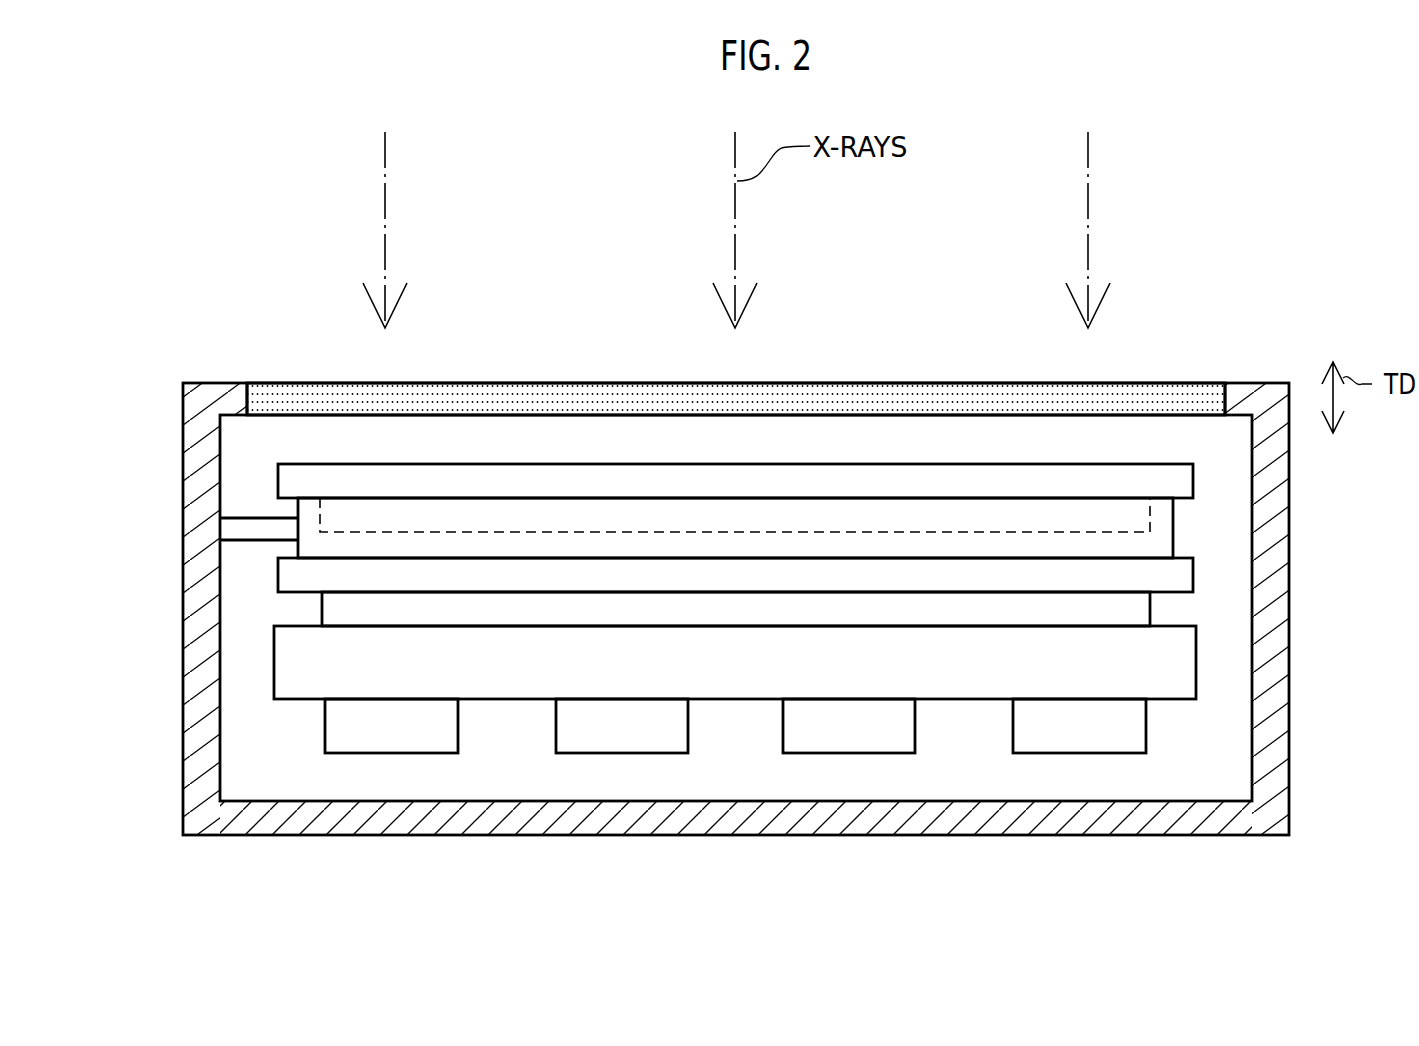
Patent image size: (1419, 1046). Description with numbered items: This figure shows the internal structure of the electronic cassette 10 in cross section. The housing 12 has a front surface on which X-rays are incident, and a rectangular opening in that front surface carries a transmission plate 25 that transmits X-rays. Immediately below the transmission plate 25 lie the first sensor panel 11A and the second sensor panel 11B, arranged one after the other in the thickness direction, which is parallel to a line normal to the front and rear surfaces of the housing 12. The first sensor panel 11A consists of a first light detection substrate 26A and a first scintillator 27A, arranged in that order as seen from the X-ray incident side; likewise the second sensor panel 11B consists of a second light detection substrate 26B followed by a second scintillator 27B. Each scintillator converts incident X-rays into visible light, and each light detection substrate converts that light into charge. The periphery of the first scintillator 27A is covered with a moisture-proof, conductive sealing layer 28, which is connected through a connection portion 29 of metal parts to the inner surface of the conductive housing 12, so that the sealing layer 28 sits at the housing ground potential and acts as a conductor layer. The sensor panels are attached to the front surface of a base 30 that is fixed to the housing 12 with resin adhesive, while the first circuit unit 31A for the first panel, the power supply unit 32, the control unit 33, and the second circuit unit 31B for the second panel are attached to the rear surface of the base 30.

The electronic cassette 10 is at (732, 552).
The housing 12 is at (222, 382).
The transmission plate 25 is at (960, 392).
The first sensor panel 11A is at (847, 512).
The first light detection substrate 26A is at (1180, 481).
The first scintillator 27A is at (1182, 512).
The sealing layer 28 is at (1163, 544).
The connection portion 29 is at (247, 528).
The second sensor panel 11B is at (620, 606).
The second light detection substrate 26B is at (290, 575).
The second scintillator 27B is at (323, 607).
The base 30 is at (1187, 660).
The first circuit unit 31A is at (390, 753).
The power supply unit 32 is at (620, 753).
The control unit 33 is at (847, 753).
The second circuit unit 31B is at (1078, 753).